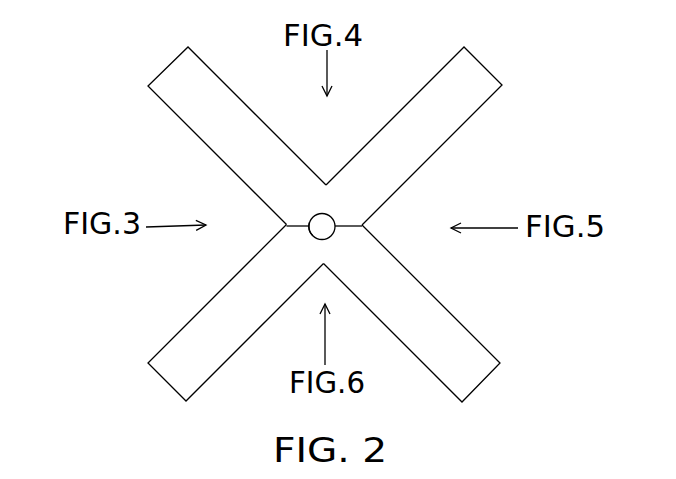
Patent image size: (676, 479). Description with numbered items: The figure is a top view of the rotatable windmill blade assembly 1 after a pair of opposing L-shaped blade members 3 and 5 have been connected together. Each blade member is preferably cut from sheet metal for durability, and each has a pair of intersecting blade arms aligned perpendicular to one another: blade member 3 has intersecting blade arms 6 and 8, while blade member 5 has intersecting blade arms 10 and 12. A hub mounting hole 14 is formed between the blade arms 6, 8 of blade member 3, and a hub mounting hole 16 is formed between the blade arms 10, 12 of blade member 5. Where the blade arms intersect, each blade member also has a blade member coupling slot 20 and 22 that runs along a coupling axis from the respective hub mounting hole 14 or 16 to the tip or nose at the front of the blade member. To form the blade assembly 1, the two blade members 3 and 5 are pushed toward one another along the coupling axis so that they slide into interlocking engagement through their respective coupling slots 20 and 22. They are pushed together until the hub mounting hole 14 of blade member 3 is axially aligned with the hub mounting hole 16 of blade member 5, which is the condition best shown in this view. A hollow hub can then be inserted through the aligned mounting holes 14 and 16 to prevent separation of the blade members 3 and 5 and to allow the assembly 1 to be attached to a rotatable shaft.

The rotatable windmill blade assembly 1 is at (328, 224).
The L-shaped blade member 3 is at (446, 313).
The L-shaped blade member 5 is at (195, 136).
The blade arm 6 is at (450, 118).
The blade arm 8 is at (405, 297).
The blade arm 10 is at (228, 135).
The blade arm 12 is at (227, 313).
The hub mounting hole 14 is at (324, 213).
The hub mounting hole 16 is at (309, 237).
The blade member coupling slot 20 is at (296, 225).
The blade member coupling slot 22 is at (348, 228).